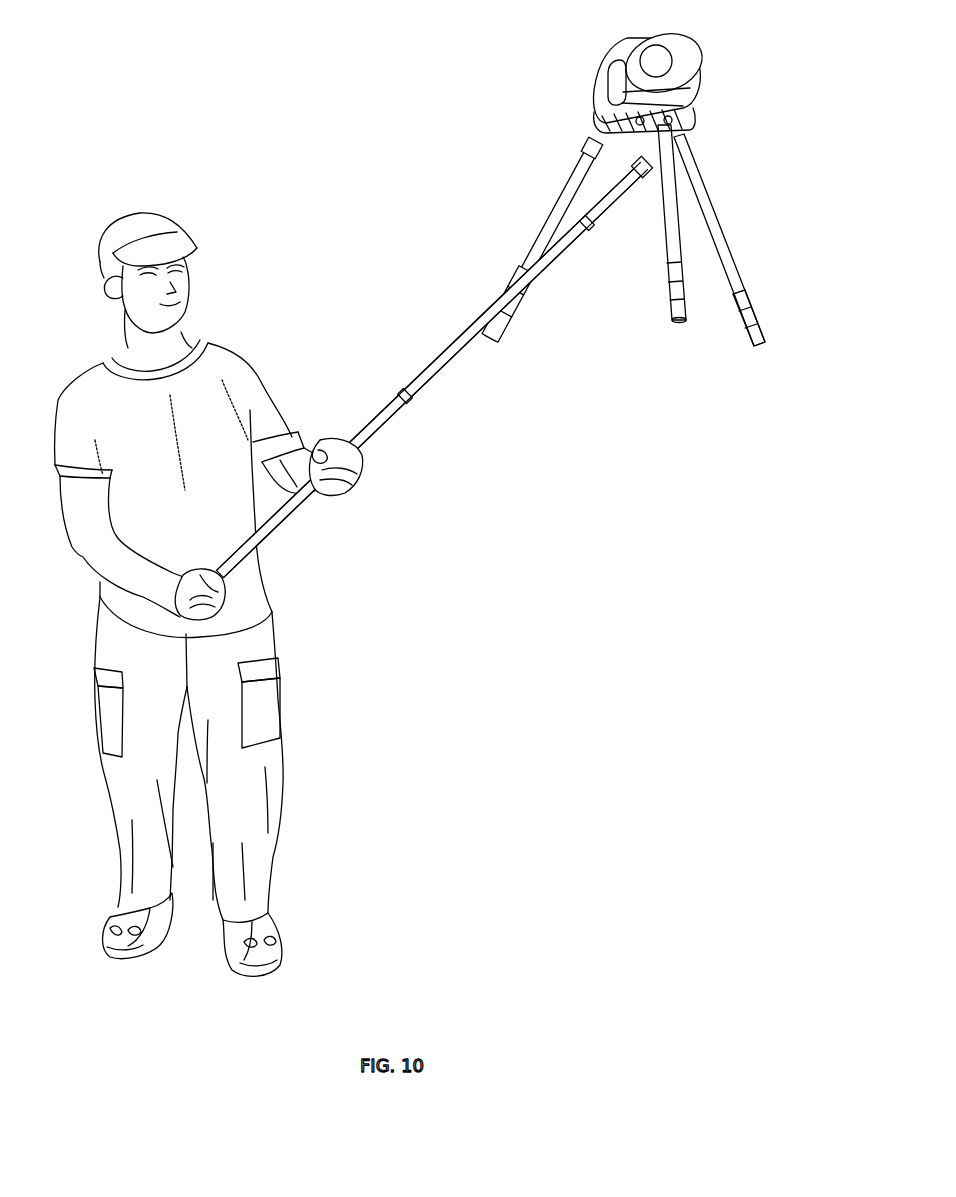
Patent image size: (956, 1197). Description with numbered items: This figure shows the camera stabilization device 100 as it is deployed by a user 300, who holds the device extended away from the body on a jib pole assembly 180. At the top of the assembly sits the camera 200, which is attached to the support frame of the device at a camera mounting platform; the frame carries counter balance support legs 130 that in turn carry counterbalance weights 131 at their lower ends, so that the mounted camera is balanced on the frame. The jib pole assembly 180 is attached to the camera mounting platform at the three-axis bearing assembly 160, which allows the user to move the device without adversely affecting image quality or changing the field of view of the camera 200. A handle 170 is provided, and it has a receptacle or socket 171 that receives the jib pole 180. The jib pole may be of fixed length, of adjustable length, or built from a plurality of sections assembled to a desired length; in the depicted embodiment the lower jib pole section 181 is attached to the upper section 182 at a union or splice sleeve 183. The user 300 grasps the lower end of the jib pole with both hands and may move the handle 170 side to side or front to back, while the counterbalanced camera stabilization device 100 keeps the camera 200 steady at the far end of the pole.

The camera stabilization device 100 is at (533, 357).
The counter balance support legs 130 is at (713, 205).
The counterbalance weights 131 is at (757, 290).
The three-axis bearing assembly 160 is at (632, 149).
The handle 170 is at (633, 199).
The receptacle or socket 171 is at (590, 234).
The jib pole assembly 180 is at (435, 415).
The lower jib pole section 181 is at (284, 541).
The upper jib pole section 182 is at (539, 286).
The union or splice sleeve 183 is at (396, 431).
The camera 200 is at (590, 77).
The user 300 is at (213, 338).